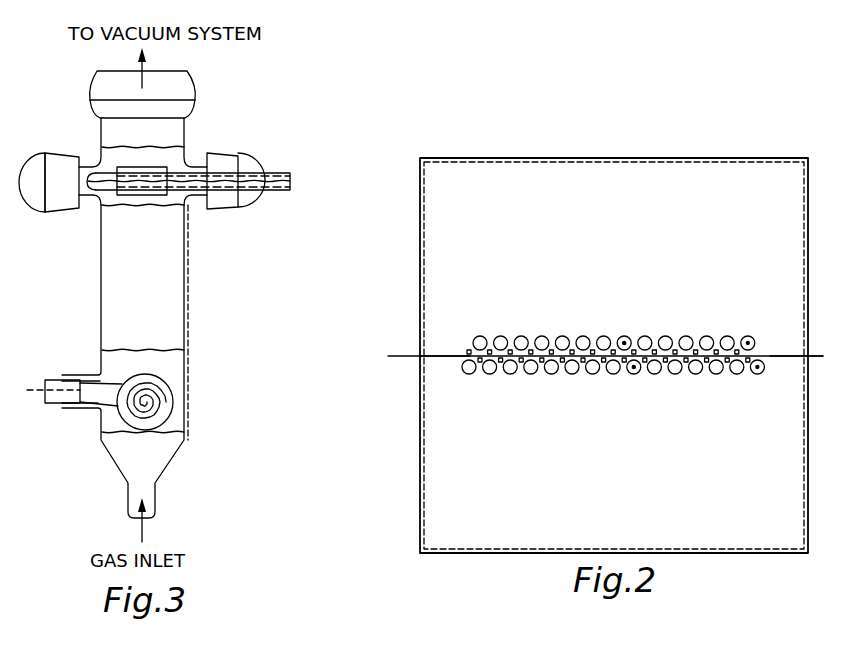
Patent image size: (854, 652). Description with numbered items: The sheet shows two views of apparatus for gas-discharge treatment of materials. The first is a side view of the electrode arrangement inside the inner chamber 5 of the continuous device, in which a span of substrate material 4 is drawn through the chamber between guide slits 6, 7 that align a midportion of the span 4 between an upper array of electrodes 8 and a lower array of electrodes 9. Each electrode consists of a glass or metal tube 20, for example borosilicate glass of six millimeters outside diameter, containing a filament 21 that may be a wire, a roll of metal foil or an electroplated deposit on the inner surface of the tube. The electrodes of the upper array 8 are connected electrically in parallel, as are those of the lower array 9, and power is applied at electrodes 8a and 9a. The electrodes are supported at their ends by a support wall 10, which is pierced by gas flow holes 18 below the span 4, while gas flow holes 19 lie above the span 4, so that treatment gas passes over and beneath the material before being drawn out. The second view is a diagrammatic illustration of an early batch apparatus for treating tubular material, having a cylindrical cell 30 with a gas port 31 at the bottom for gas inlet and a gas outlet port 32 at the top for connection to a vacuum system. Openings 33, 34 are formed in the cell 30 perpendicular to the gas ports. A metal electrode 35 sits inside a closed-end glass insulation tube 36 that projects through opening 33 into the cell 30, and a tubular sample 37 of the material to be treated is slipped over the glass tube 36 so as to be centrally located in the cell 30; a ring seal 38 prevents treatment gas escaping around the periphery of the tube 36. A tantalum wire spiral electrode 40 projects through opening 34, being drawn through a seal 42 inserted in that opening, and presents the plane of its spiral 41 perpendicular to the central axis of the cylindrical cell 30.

In FIG. 2, the span of substrate material 4 is at (447, 355).
In FIG. 2, the inner chamber 5 is at (633, 158).
In FIG. 2, the guide slit 6 is at (418, 355).
In FIG. 2, the guide slit 7 is at (810, 356).
In FIG. 2, the upper array of electrodes 8 is at (586, 340).
In FIG. 2, the electrode 8a is at (755, 340).
In FIG. 2, the lower array of electrodes 9 is at (574, 371).
In FIG. 2, the electrode 9a is at (760, 373).
In FIG. 2, the support wall 10 is at (716, 175).
In FIG. 2, the gas flow holes 18 is at (540, 371).
In FIG. 2, the gas flow holes 19 is at (533, 340).
In FIG. 2, the tube 20 is at (626, 342).
In FIG. 2, the filament 21 is at (623, 341).
In FIG. 3, the cylindrical cell 30 is at (187, 323).
In FIG. 3, the gas port 31 is at (128, 493).
In FIG. 3, the gas outlet port 32 is at (187, 80).
In FIG. 3, the opening 33 is at (196, 200).
In FIG. 3, the opening 34 is at (92, 375).
In FIG. 3, the metal electrode 35 is at (316, 148).
In FIG. 3, the glass insulation tube 36 is at (170, 170).
In FIG. 3, the tubular sample 37 is at (156, 210).
In FIG. 3, the ring seal 38 is at (275, 215).
In FIG. 3, the tantalum wire spiral electrode 40 is at (40, 390).
In FIG. 3, the spiral 41 is at (142, 430).
In FIG. 3, the seal 42 is at (55, 403).